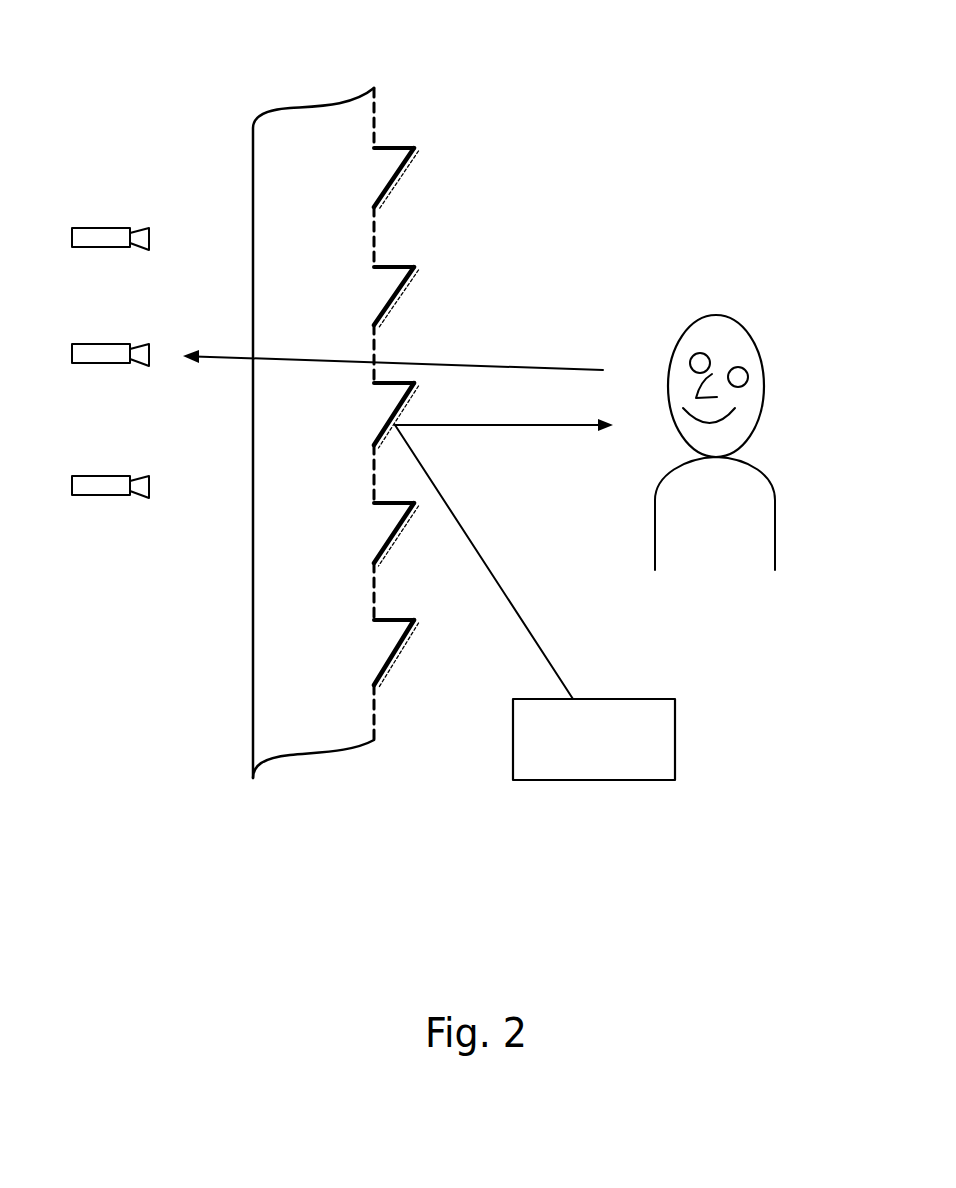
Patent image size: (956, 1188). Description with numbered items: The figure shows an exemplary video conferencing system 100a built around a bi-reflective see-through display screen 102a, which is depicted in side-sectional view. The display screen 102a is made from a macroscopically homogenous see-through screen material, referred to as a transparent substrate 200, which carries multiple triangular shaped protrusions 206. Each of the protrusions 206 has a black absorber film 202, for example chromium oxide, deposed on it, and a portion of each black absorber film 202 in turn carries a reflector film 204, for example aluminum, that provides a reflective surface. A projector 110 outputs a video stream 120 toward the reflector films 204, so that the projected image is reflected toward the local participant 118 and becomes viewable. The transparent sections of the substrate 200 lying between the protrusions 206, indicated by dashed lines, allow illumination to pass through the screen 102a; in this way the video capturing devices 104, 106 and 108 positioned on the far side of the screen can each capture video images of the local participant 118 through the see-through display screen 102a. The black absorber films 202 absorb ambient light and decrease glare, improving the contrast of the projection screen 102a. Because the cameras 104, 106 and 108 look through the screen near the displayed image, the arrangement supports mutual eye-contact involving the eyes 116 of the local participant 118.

The video conferencing system 100a is at (832, 24).
The bi-reflective display screen 102a is at (276, 81).
The camera 104 is at (113, 228).
The camera 106 is at (113, 344).
The camera 108 is at (113, 476).
The projector 110 is at (572, 764).
The eyes 116 is at (748, 377).
The local participant 118 is at (693, 322).
The video stream 120 is at (492, 427).
The transparent substrate 200 is at (284, 728).
The black absorber film 202 is at (388, 542).
The reflector film 204 is at (402, 292).
The protrusions 206 is at (375, 754).